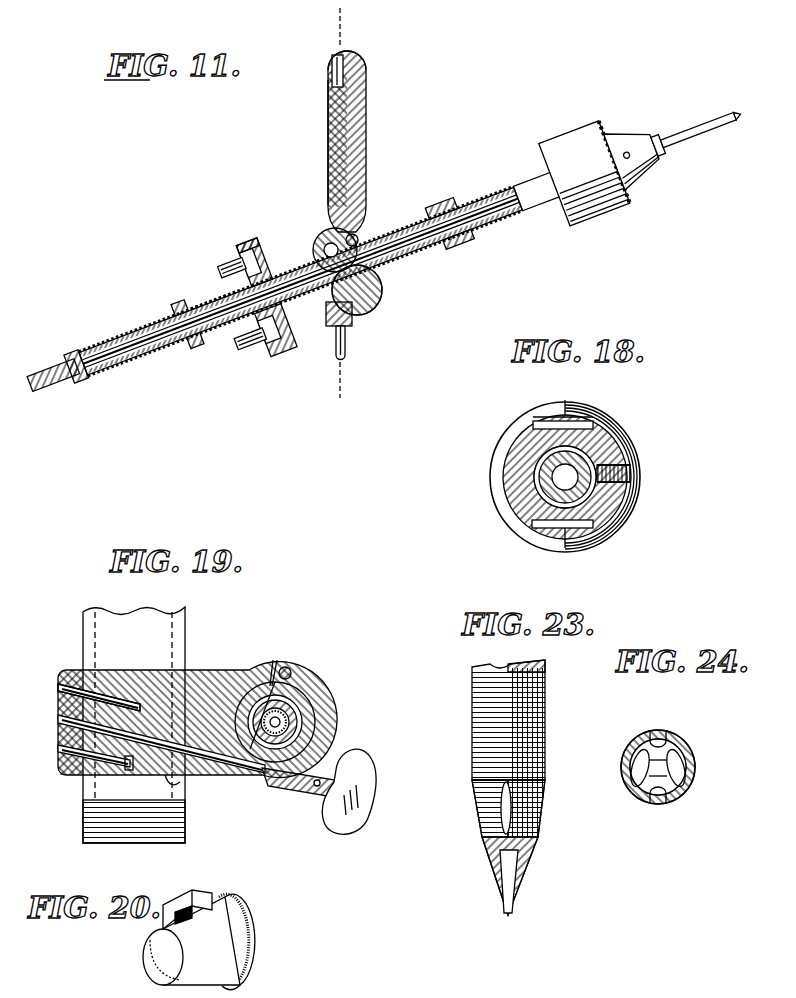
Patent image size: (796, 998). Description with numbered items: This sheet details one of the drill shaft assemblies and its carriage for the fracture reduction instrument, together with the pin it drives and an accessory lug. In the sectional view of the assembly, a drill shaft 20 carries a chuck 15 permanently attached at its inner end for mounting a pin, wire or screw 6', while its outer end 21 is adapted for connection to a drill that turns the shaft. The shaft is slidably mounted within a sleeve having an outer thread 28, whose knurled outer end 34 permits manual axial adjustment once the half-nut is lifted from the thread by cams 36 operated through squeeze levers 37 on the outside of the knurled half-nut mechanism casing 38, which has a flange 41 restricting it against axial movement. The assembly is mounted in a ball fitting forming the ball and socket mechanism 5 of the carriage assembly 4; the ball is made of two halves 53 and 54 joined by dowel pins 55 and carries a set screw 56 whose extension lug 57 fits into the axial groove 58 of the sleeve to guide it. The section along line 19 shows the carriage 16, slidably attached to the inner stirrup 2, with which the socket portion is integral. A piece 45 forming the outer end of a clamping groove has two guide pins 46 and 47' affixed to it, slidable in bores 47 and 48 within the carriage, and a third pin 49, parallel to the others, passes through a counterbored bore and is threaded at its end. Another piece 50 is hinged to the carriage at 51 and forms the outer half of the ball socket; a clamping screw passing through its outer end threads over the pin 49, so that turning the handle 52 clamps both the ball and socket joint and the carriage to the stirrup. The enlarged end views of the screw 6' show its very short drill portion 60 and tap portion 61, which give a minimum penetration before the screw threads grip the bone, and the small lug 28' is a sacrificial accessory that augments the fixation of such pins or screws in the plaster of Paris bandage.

In FIG. 11, the inner stirrup 2 is at (366, 138).
In FIG. 19, the inner stirrup 2 is at (88, 633).
In FIG. 11, the carriage assembly 4 is at (300, 280).
In FIG. 11, the ball and socket mechanism 5 is at (370, 282).
In FIG. 19, the ball and socket mechanism 5 is at (312, 710).
In FIG. 11, the screw 6' is at (700, 128).
In FIG. 23, the screw 6' is at (521, 787).
In FIG. 24, the screw 6' is at (658, 753).
In FIG. 11, the chuck 15 is at (608, 164).
In FIG. 11, the carriage 16 is at (328, 162).
In FIG. 19, the carriage 16 is at (193, 672).
In FIG. 11, the section line 19— 19 is at (350, 22).
In FIG. 11, the drill shaft 20 is at (319, 274).
In FIG. 19, the drill shaft 20 is at (292, 727).
In FIG. 11, the outer end 21 is at (57, 374).
In FIG. 11, the outer thread 28 is at (195, 340).
In FIG. 20, the lug 28' is at (180, 940).
In FIG. 11, the outer end 34 is at (179, 308).
In FIG. 11, the cams 36 is at (264, 297).
In FIG. 11, the squeeze levers 37 is at (240, 304).
In FIG. 11, the half-nut mechanism casing 38 is at (247, 245).
In FIG. 11, the flange 41 is at (326, 246).
In FIG. 19, the flange 41 is at (322, 719).
In FIG. 11, the piece 45 is at (357, 60).
In FIG. 19, the piece 45 is at (60, 735).
In FIG. 19, the guide pin 46 is at (102, 690).
In FIG. 19, the bore 47 is at (94, 772).
In FIG. 19, the guide pin 47' is at (114, 677).
In FIG. 19, the bore 48 is at (129, 772).
In FIG. 19, the third pin 49 is at (180, 785).
In FIG. 11, the piece 50 is at (352, 318).
In FIG. 19, the piece 50 is at (316, 692).
In FIG. 19, the hinge 51 is at (288, 666).
In FIG. 11, the handle 52 is at (339, 352).
In FIG. 19, the handle 52 is at (369, 773).
In FIG. 11, the ball half 53 is at (366, 300).
In FIG. 18, the ball half 53 is at (516, 464).
In FIG. 19, the ball half 53 is at (301, 680).
In FIG. 11, the ball half 54 is at (313, 252).
In FIG. 18, the ball half 54 is at (628, 515).
In FIG. 19, the ball half 54 is at (218, 695).
In FIG. 18, the dowel pins 55 is at (553, 418).
In FIG. 11, the set screw 56 is at (354, 236).
In FIG. 18, the set screw 56 is at (626, 470).
In FIG. 18, the extension lug 57 is at (612, 445).
In FIG. 11, the axial groove 58 is at (214, 300).
In FIG. 18, the axial groove 58 is at (633, 490).
In FIG. 19, the axial groove 58 is at (244, 710).
In FIG. 23, the drill portion 60 is at (520, 868).
In FIG. 24, the drill portion 60 is at (690, 780).
In FIG. 23, the tap portion 61 is at (478, 800).
In FIG. 24, the tap portion 61 is at (630, 775).